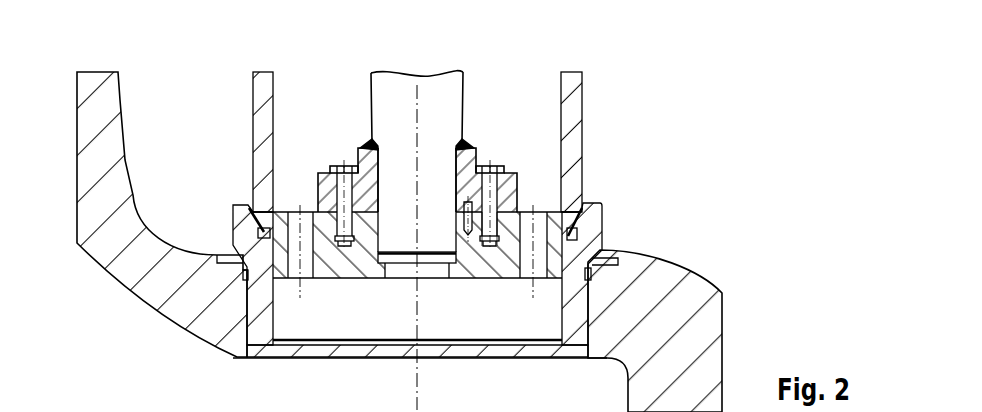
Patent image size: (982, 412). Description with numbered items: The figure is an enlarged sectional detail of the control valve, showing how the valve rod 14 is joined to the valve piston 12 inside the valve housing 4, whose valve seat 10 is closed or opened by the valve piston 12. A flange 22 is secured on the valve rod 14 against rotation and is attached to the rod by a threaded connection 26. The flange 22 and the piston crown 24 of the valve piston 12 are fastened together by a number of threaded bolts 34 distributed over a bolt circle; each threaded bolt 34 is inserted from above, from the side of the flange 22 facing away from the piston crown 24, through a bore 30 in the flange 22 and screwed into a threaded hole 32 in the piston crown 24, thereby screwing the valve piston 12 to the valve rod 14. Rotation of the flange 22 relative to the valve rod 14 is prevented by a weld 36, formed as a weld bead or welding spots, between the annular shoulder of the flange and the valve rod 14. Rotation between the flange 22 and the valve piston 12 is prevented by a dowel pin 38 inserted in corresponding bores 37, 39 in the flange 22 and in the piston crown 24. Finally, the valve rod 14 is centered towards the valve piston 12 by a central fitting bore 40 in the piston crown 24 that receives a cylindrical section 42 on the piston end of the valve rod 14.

The valve housing 4 is at (685, 300).
The valve seat 10 is at (492, 303).
The valve piston 12 is at (582, 125).
The valve rod 14 is at (389, 85).
The flange 22 is at (318, 190).
The piston crown 24 is at (336, 266).
The threaded connection 26 is at (393, 215).
The bore 30 is at (518, 182).
The threaded hole 32 is at (510, 220).
The threaded bolts 34 is at (356, 228).
The weld 36 is at (361, 144).
The bore 37 is at (459, 206).
The dowel pin 38 is at (488, 250).
The bore 39 is at (463, 188).
The central fitting bore 40 is at (383, 246).
The cylindrical section 42 is at (446, 258).